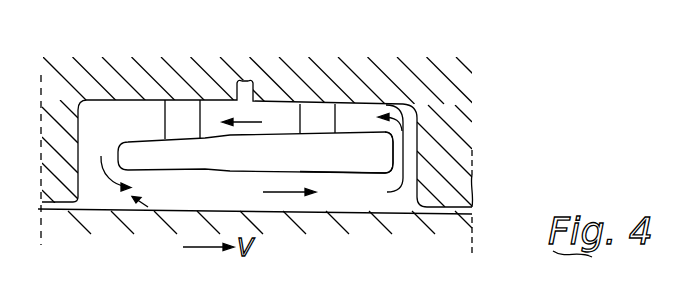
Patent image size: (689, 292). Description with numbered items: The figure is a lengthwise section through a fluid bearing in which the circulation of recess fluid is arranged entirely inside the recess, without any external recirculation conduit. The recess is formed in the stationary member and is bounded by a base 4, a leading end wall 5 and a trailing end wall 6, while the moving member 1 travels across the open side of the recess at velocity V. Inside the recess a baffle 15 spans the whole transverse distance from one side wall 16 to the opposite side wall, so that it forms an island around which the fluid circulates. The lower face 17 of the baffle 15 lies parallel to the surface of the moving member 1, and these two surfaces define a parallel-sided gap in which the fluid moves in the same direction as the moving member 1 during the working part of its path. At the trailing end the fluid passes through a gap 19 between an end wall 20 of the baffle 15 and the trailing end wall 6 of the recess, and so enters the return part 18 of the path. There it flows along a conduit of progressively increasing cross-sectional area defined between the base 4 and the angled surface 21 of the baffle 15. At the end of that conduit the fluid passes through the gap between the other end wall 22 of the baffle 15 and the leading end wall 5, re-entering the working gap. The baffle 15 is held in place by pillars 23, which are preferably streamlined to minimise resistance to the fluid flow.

The moving member 1 is at (140, 197).
The base 4 is at (212, 105).
The leading end wall 5 is at (80, 128).
The trailing end wall 6 is at (417, 138).
The baffle 15 is at (290, 163).
The side wall 16 is at (206, 203).
The lower face 17 is at (343, 175).
The return part 18 is at (267, 112).
The gap 19 is at (413, 162).
The end wall 20 is at (396, 158).
The angled surface 21 is at (357, 130).
The end wall 22 is at (125, 127).
The pillars 23 is at (165, 112).